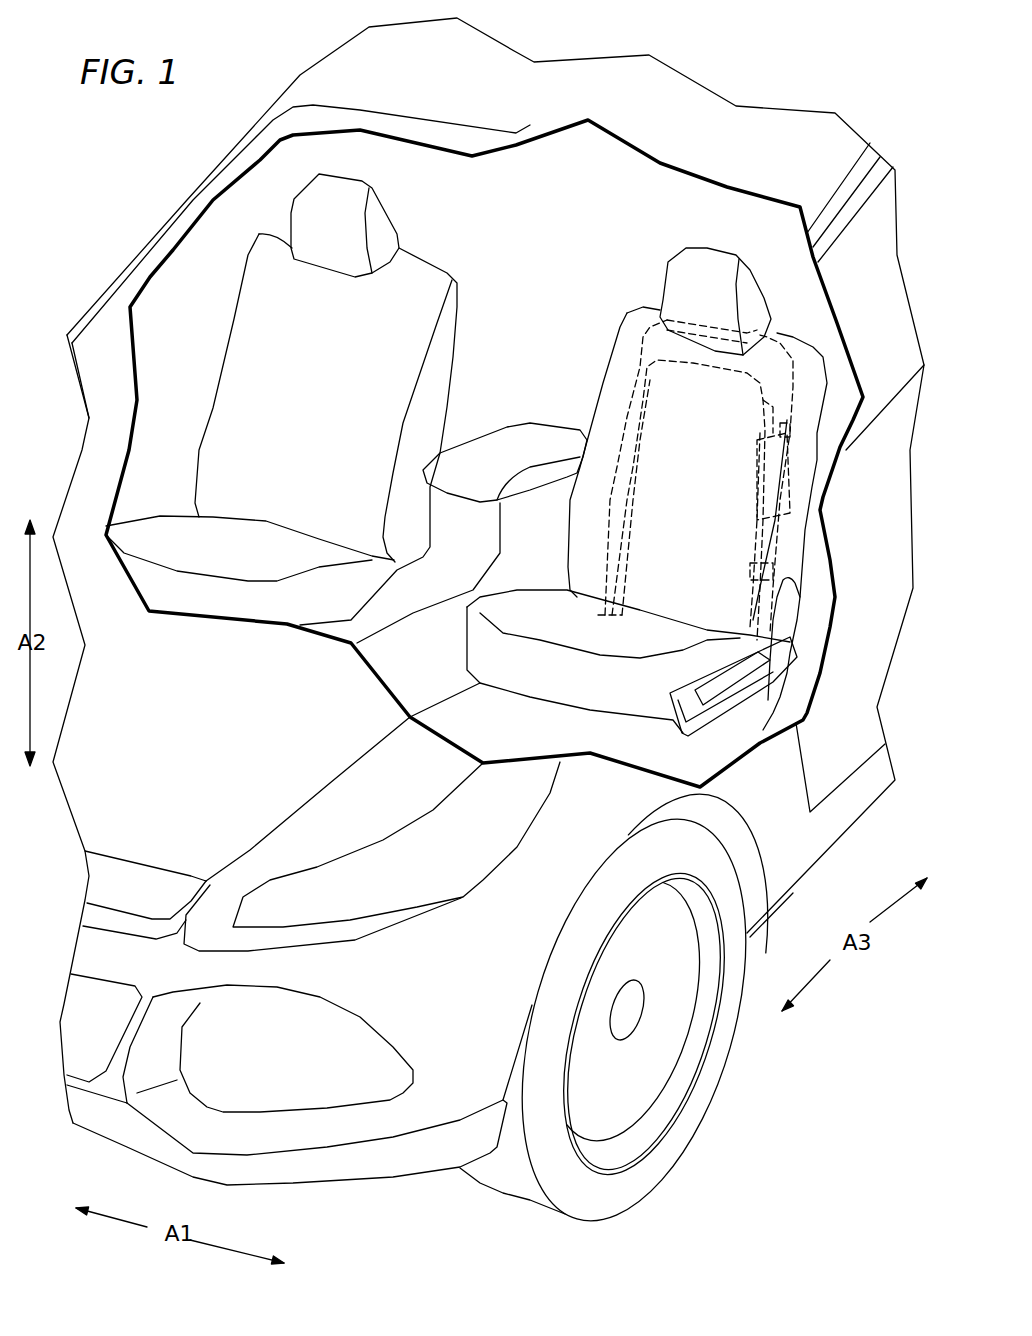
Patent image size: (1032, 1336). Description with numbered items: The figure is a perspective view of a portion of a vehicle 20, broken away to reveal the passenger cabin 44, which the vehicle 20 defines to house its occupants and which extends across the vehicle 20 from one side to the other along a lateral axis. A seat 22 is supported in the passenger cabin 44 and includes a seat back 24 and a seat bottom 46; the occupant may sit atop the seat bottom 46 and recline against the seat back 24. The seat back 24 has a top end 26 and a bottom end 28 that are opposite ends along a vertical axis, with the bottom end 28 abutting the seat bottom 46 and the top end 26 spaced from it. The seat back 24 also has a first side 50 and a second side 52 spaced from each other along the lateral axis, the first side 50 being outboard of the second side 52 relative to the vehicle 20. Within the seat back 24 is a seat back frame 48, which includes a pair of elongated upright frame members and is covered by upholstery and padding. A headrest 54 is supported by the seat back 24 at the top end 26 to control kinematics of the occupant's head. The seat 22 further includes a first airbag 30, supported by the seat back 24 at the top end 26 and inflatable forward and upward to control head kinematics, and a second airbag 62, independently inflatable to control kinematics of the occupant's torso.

The vehicle 20 is at (778, 135).
The seat 22 is at (684, 468).
The seat back 24 is at (818, 462).
The top end 26 is at (796, 337).
The bottom end 28 is at (762, 607).
The first airbag 30 is at (773, 407).
The passenger cabin 44 is at (589, 181).
The seat bottom 46 is at (687, 653).
The seat back frame 48 is at (627, 350).
The first side 50 is at (828, 401).
The second side 52 is at (605, 387).
The headrest 54 is at (686, 245).
The second airbag 62 is at (754, 544).